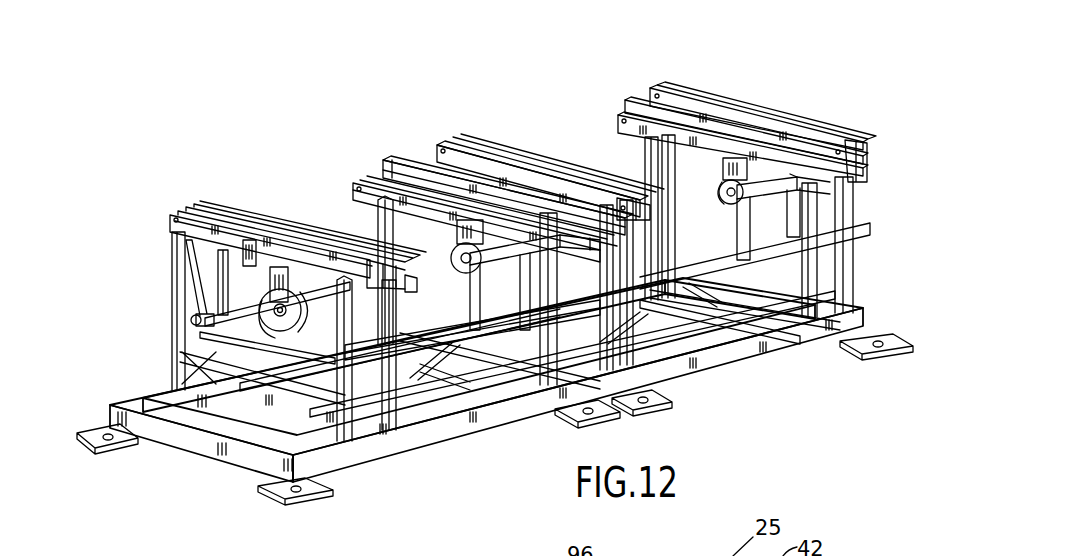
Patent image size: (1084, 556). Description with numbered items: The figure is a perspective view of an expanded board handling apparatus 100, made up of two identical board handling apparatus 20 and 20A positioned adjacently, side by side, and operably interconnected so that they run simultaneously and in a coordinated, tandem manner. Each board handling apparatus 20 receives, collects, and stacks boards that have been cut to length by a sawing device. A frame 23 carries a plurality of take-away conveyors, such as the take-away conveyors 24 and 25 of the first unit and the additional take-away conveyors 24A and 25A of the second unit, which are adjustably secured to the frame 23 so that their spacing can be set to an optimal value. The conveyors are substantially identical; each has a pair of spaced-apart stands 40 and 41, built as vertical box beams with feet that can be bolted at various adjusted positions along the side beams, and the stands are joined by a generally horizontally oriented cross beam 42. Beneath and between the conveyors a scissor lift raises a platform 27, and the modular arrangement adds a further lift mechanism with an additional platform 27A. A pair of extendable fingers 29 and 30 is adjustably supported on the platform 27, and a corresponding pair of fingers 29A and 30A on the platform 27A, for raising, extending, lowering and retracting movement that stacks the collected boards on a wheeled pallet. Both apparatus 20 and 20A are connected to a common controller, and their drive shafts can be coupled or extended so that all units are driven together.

The expanded board handling apparatus 100 is at (268, 124).
The board handling apparatus 20 is at (170, 188).
The board handling apparatus 20A is at (494, 110).
The frame 23 is at (186, 460).
The take-away conveyor 24 is at (227, 212).
The take-away conveyor 24A is at (448, 132).
The take-away conveyor 25 is at (395, 152).
The take-away conveyor 25A is at (675, 78).
The platform 27 is at (450, 348).
The platform 27A is at (714, 325).
The extendable finger 29 is at (314, 238).
The extendable finger 29A is at (598, 176).
The extendable finger 30 is at (453, 213).
The extendable finger 30A is at (700, 128).
The stand 40 is at (378, 382).
The stand 41 is at (173, 303).
The cross beam 42 is at (283, 290).